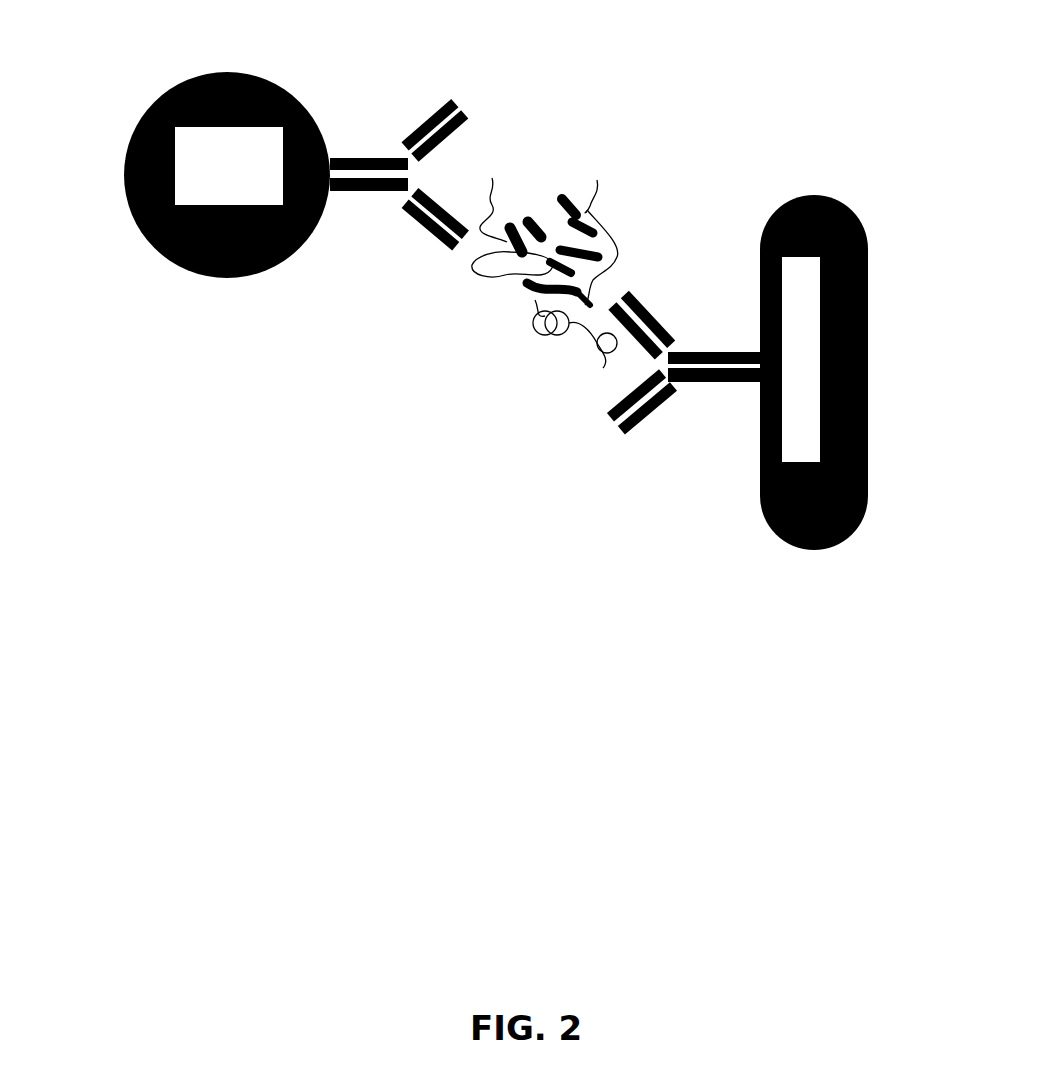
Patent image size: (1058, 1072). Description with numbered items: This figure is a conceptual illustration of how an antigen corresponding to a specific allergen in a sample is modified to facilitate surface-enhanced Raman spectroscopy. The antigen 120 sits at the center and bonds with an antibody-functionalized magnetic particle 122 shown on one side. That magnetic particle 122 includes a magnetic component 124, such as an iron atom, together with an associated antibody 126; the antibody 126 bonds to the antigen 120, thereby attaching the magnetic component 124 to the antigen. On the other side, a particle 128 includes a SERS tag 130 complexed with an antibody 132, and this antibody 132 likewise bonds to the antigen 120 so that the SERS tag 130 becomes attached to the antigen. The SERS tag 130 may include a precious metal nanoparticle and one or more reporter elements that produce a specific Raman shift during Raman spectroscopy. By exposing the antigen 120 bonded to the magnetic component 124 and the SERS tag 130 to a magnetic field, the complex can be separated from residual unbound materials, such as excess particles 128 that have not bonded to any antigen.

The antigen 120 is at (636, 214).
The antibody-functionalized magnetic particle 122 is at (104, 104).
The magnetic component 124 is at (223, 278).
The antibody 126 is at (442, 110).
The particle 128 is at (906, 233).
The SERS tag 130 is at (802, 543).
The antibody 132 is at (640, 417).